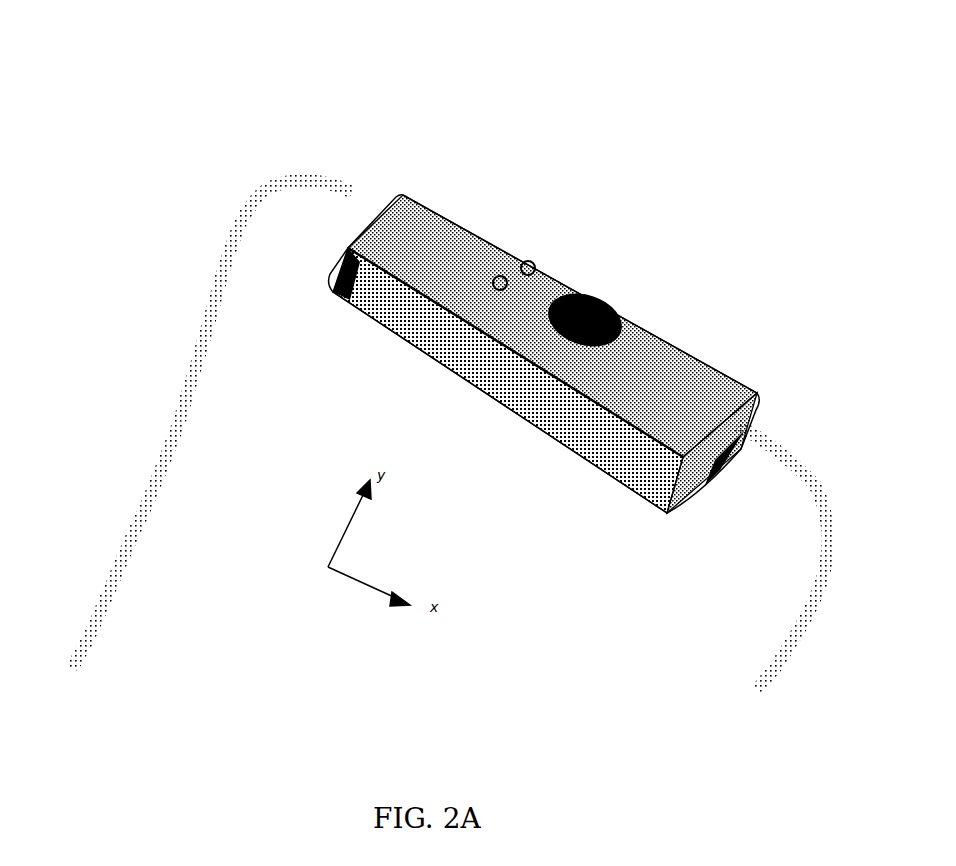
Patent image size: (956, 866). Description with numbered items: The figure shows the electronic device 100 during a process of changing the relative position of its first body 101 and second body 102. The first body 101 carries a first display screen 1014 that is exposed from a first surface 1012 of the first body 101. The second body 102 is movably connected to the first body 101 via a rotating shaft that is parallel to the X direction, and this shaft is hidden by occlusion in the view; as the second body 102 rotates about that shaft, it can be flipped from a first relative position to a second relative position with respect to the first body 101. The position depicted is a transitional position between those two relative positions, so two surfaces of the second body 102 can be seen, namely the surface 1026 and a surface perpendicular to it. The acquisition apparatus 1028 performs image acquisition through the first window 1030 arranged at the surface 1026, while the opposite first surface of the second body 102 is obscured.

The electronic device 100 is at (318, 50).
The first body 101 is at (431, 435).
The second body 102 is at (570, 330).
The first surface of the first body 1012 is at (193, 375).
The first display screen 1014 is at (208, 490).
The surface of the second body 1026 is at (687, 353).
The acquisition apparatus 1028 is at (612, 303).
The first window 1030 is at (597, 293).